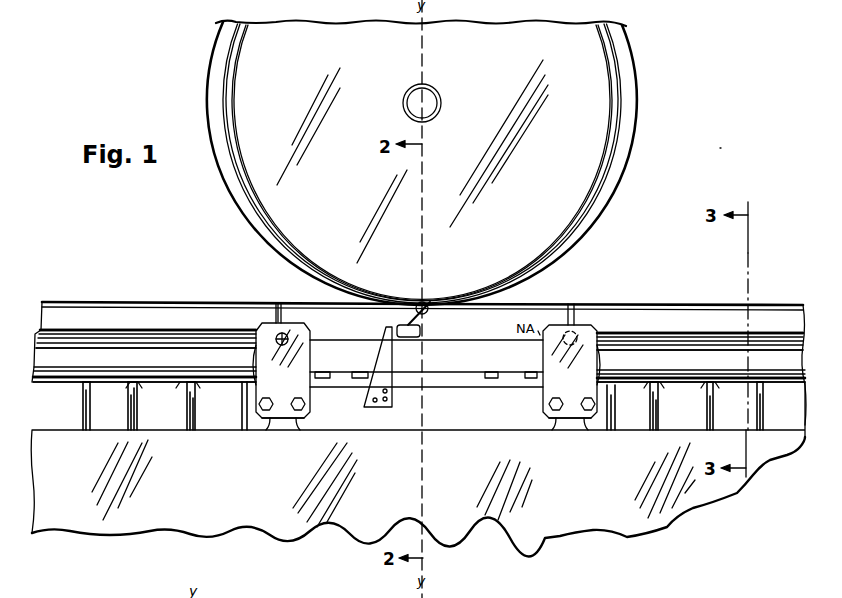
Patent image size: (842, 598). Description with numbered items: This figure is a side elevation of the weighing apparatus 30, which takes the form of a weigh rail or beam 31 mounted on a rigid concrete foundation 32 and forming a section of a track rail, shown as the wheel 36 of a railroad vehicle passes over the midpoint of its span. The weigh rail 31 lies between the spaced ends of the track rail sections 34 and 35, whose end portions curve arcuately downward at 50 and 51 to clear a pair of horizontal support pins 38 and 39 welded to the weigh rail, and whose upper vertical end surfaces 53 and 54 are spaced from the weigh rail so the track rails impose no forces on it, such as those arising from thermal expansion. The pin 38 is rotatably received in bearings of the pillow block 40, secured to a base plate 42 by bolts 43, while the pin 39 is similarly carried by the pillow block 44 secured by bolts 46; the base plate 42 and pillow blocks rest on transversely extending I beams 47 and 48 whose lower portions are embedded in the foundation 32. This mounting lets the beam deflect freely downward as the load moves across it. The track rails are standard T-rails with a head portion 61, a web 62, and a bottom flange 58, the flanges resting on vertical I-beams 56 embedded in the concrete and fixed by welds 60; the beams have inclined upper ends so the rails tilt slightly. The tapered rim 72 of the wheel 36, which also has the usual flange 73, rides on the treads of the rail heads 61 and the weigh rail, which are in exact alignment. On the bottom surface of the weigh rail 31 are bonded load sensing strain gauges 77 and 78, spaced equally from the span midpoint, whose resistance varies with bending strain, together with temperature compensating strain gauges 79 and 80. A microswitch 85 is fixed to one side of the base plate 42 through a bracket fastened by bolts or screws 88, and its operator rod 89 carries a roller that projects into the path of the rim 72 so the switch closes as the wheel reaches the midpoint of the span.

The weighing apparatus 30 is at (718, 145).
The weigh rail or beam 31 is at (553, 304).
The foundation 32 is at (93, 518).
The track rail section 34 is at (137, 302).
The track rail section 35 is at (697, 315).
The wheel 36 is at (608, 103).
The support pin 38 is at (274, 303).
The support pin 39 is at (578, 335).
The pillow block 40 is at (255, 332).
The base plate 42 is at (407, 408).
The bolts 43 is at (298, 396).
The pillow block 44 is at (548, 388).
The bolts 46 is at (588, 396).
The transversely extending I beam 47 is at (298, 421).
The transversely extending I beam 48 is at (586, 421).
The downwardly curved rail end portion 50 is at (250, 358).
The downwardly curved rail end portion 51 is at (598, 365).
The upper vertical end surface 53 is at (284, 316).
The upper vertical end surface 54 is at (567, 322).
The vertical I-beams 56 is at (195, 410).
The bottom flange 58 is at (47, 381).
The welds 60 is at (142, 384).
The head portion 61 is at (60, 315).
The web 62 is at (60, 352).
The rim 72 is at (613, 143).
The flange 73 is at (632, 169).
The load sensing strain gauge 77 is at (360, 379).
The load sensing strain gauge 78 is at (490, 380).
The temperature compensating strain gauge 79 is at (320, 379).
The temperature compensating strain gauge 80 is at (530, 380).
The microswitch 85 is at (403, 338).
The bolts or screws 88 is at (385, 397).
The operator rod 89 is at (427, 312).